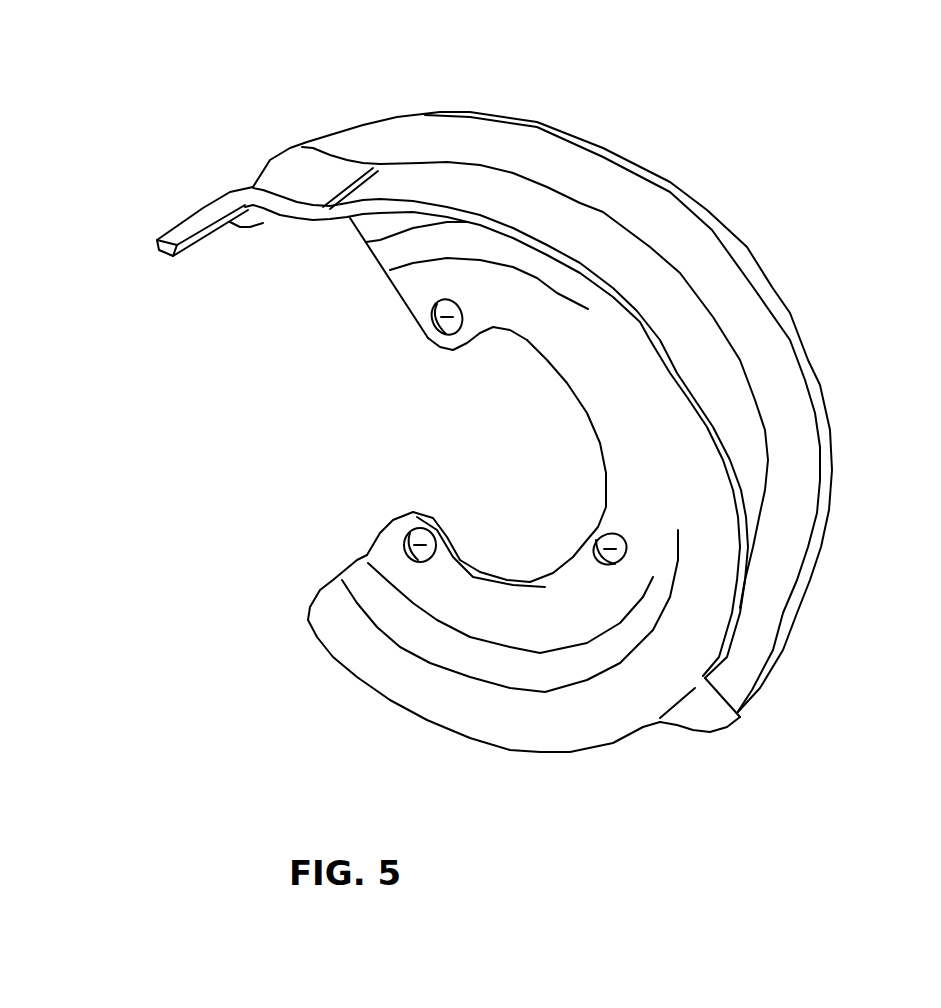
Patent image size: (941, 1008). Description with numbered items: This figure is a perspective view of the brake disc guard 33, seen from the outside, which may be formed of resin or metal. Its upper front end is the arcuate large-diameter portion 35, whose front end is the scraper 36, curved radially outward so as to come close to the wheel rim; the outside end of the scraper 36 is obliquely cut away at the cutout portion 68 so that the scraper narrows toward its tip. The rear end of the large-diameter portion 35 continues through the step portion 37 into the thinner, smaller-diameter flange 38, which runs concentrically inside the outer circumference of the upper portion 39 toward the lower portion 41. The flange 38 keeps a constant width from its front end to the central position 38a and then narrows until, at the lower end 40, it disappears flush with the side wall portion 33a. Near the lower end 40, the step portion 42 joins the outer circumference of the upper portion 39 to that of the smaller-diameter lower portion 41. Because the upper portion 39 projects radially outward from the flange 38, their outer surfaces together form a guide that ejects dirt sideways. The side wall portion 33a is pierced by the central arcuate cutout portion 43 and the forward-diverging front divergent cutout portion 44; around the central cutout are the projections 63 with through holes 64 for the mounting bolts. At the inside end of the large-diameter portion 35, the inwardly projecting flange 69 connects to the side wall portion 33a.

The brake disc guard 33 is at (542, 395).
The side wall portion 33a is at (517, 457).
The large-diameter portion 35 is at (379, 234).
The scraper 36 is at (200, 204).
The step portion 37 is at (314, 128).
The flange 38 is at (599, 440).
The central position 38a is at (725, 461).
The upper portion 39 is at (622, 374).
The lower end 40 is at (782, 704).
The lower portion 41 is at (510, 622).
The step portion 42 is at (700, 763).
The central arcuate cutout portion 43 is at (494, 372).
The front divergent cutout portion 44 is at (383, 485).
The projections 63 is at (468, 441).
The through holes 64 is at (503, 434).
The cutout portion 68 is at (163, 285).
The flange 69 is at (256, 277).